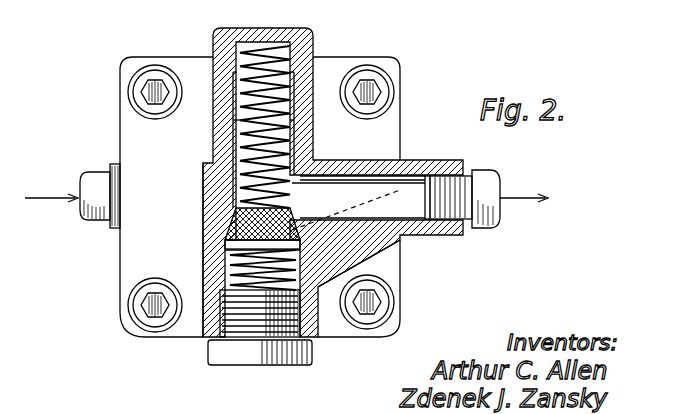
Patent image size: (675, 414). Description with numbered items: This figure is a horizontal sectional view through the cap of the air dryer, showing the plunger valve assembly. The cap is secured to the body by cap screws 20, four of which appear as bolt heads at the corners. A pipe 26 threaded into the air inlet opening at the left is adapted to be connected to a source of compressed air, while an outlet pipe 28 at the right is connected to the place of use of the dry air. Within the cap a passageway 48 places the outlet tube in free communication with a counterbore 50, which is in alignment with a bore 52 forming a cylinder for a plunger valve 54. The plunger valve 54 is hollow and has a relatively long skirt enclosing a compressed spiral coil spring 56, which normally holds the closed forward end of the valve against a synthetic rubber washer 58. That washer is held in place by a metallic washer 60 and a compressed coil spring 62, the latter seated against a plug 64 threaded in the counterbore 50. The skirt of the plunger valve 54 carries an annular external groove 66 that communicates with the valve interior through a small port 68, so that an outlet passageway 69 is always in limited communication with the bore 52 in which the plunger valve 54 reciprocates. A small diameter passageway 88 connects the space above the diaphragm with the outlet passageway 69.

The cap screws 20 is at (140, 104).
The pipe 26 is at (92, 172).
The outlet pipe 28 is at (482, 176).
The passageway 48 is at (425, 243).
The counterbore 50 is at (195, 322).
The bore 52 is at (285, 90).
The plunger valve 54 is at (296, 146).
The compressed spiral coil spring 56 is at (280, 42).
The synthetic rubber washer 58 is at (305, 224).
The metallic washer 60 is at (240, 254).
The compressed coil spring 62 is at (232, 271).
The plug 64 is at (275, 367).
The annular external groove 66 is at (332, 174).
The small port 68 is at (232, 204).
The outlet passageway 69 is at (406, 166).
The small diameter passageway 88 is at (316, 198).